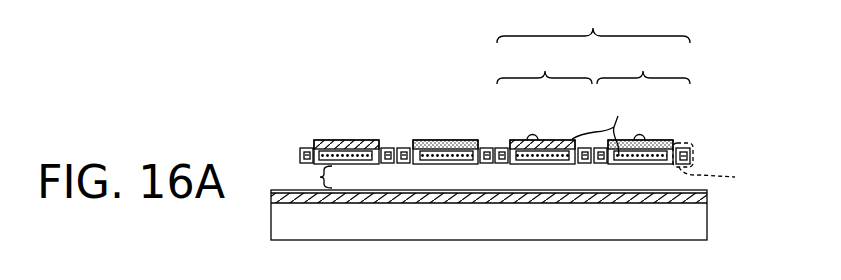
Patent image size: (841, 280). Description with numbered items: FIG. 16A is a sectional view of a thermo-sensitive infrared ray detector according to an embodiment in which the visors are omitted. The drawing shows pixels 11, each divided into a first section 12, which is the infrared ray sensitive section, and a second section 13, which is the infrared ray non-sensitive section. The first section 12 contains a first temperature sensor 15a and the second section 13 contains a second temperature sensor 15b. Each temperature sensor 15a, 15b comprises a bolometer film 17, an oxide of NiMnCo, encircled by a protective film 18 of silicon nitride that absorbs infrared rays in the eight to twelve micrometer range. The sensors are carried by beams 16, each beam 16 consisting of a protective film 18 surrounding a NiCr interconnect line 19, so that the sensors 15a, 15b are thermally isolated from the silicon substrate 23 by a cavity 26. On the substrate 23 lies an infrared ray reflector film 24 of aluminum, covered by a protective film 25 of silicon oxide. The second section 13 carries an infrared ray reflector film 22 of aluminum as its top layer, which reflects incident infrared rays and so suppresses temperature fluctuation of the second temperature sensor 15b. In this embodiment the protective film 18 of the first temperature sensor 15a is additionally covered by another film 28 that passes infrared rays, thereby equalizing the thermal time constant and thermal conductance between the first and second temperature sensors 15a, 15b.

The pixels 11 is at (593, 24).
The first section 12 is at (643, 65).
The second section 13 is at (544, 65).
The first temperature sensor 15a is at (637, 165).
The second temperature sensor 15b is at (527, 165).
The beam 16 is at (721, 178).
The bolometer film 17 is at (603, 124).
The protective film 18 is at (620, 160).
The interconnect line 19 is at (690, 152).
The infrared ray reflector film 22 is at (353, 139).
The substrate 23 is at (360, 223).
The infrared ray reflector film 24 is at (707, 208).
The protective film 25 is at (707, 197).
The cavity 26 is at (310, 177).
The film 28 is at (453, 139).